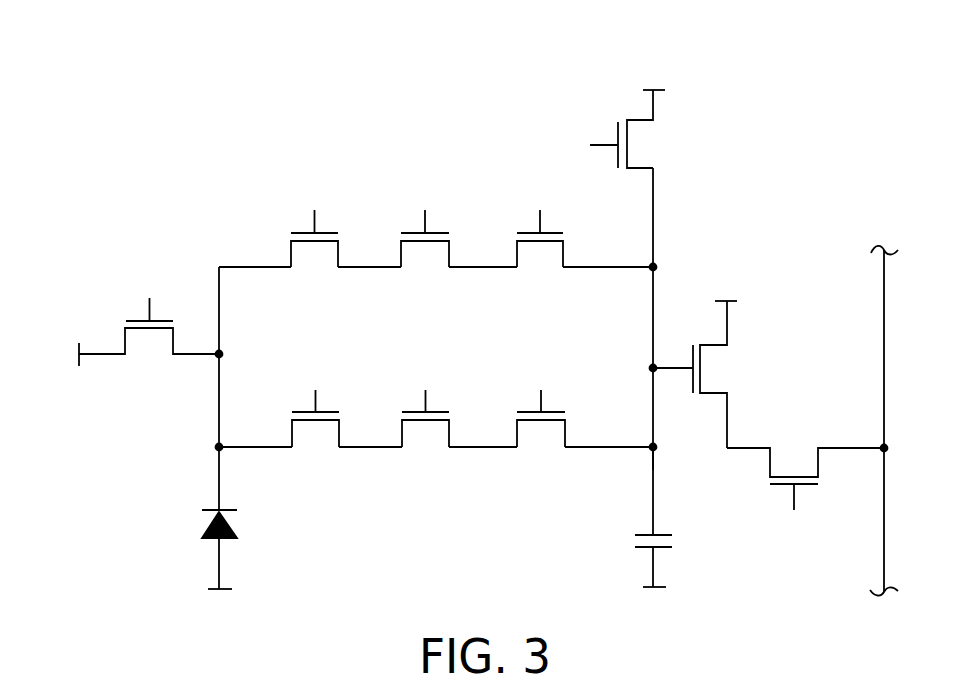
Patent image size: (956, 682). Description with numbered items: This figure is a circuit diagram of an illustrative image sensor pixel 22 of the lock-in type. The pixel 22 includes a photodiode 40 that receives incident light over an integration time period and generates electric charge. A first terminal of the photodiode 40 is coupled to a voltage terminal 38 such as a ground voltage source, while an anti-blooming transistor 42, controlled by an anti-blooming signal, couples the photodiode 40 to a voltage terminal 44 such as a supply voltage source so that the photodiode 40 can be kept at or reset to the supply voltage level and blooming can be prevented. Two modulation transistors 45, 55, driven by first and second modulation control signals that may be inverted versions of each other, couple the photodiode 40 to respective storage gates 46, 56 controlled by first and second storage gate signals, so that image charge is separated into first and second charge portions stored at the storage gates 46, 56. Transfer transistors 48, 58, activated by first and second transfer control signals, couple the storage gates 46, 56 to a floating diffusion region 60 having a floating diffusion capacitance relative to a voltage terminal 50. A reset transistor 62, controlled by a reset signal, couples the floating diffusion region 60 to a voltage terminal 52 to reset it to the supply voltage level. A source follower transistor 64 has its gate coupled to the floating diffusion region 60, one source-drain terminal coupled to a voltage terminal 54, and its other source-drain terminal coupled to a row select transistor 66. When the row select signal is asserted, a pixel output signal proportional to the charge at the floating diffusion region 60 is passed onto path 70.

The image sensor pixel 22 is at (795, 92).
The voltage terminal 38 is at (220, 595).
The photodiode 40 is at (200, 520).
The anti-blooming transistor 42 is at (145, 357).
The voltage terminal 44 is at (72, 353).
The transistor 45 is at (317, 270).
The storage gate 46 is at (425, 270).
The transfer transistor 48 is at (540, 270).
The voltage terminal 50 is at (653, 593).
The voltage terminal 52 is at (655, 80).
The voltage terminal 54 is at (727, 293).
The transistor 55 is at (317, 455).
The storage gate 56 is at (425, 457).
The transfer transistor 58 is at (542, 457).
The floating diffusion region 60 is at (642, 460).
The reset transistor 62 is at (655, 150).
The source follower transistor 64 is at (728, 377).
The row select transistor 66 is at (793, 447).
The path 70 is at (887, 540).